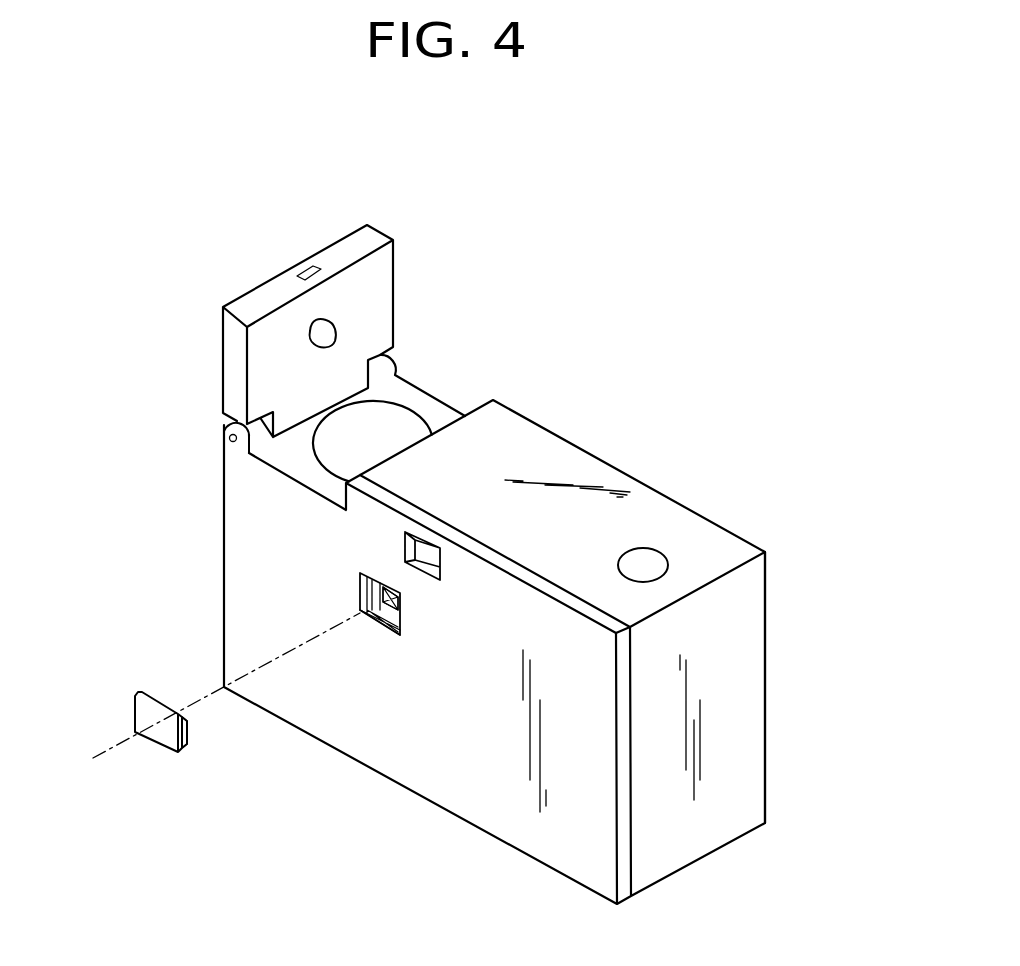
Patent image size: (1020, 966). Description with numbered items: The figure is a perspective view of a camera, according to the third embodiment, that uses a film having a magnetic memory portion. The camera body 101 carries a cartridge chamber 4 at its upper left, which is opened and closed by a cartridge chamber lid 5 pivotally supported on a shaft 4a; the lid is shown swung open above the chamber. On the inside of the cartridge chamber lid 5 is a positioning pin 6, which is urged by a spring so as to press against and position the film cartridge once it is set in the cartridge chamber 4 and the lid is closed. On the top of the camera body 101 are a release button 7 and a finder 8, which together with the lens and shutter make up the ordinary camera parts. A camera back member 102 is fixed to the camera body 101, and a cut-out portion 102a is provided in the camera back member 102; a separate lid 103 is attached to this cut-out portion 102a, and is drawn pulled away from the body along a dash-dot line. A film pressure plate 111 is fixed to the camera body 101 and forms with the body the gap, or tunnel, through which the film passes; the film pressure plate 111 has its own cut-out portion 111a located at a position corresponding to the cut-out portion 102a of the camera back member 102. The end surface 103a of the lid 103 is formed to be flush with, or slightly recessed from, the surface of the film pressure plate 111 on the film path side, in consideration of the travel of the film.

The cartridge chamber 4 is at (413, 393).
The shaft 4a is at (228, 434).
The cartridge chamber lid 5 is at (228, 353).
The positioning pin 6 is at (312, 328).
The release button 7 is at (652, 548).
The finder 8 is at (426, 545).
The camera body 101 is at (753, 612).
The camera back member 102 is at (543, 848).
The cut-out portion 102a is at (378, 628).
The lid 103 is at (165, 743).
The end surface 103a is at (193, 732).
The film pressure plate 111 is at (373, 583).
The cut-out portion 111a is at (403, 607).